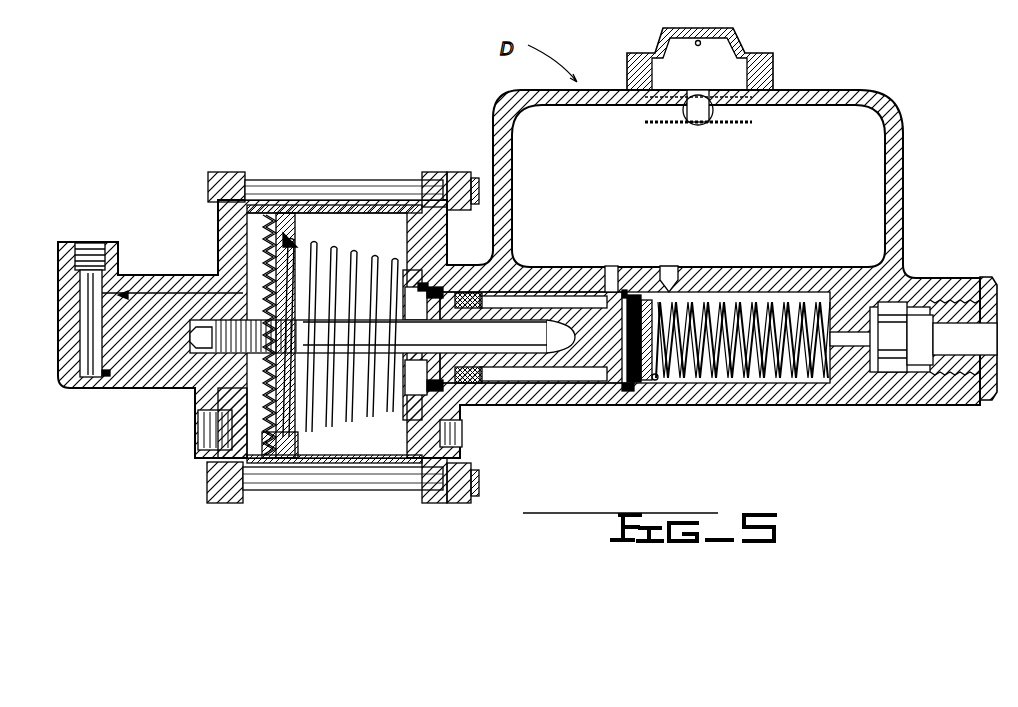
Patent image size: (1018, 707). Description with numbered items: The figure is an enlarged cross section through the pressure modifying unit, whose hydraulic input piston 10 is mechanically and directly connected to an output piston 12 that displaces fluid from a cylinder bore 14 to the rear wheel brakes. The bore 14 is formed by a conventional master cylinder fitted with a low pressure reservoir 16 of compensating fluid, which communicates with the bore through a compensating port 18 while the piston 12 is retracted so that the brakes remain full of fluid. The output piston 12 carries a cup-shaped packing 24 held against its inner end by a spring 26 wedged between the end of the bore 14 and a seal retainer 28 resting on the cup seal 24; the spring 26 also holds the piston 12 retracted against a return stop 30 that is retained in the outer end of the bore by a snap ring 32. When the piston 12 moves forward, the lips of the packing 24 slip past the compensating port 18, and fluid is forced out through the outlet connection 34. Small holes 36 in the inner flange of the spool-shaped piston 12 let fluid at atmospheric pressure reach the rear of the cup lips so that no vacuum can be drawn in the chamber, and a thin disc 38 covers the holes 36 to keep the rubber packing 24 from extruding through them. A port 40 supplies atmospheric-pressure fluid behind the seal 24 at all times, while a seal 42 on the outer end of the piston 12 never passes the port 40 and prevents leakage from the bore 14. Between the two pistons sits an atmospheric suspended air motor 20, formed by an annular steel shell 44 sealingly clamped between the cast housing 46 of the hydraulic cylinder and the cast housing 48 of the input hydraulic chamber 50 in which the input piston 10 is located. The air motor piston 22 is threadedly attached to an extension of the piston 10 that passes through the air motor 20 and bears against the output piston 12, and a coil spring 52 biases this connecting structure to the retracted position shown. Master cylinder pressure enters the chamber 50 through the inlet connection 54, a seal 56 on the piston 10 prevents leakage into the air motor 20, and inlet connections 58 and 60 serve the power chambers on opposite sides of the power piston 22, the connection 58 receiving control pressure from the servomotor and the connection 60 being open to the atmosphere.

The hydraulic input piston 10 is at (163, 295).
The output piston 12 is at (578, 370).
The cylinder bore 14 is at (795, 385).
The low pressure reservoir 16 is at (706, 170).
The compensating port 18 is at (665, 272).
The air motor 20 is at (380, 177).
The piston of the air motor 22 is at (290, 240).
The cup-shaped packing 24 is at (640, 393).
The spring 26 is at (770, 385).
The seal retainer 28 is at (652, 393).
The return stop 30 is at (438, 288).
The snap ring 32 is at (428, 283).
The outlet connection 34 is at (990, 355).
The small holes 36 is at (620, 392).
The thin disc 38 is at (628, 395).
The port 40 is at (616, 268).
The seal 42 is at (470, 385).
The annular steel shell 44 is at (380, 463).
The cast housing of the hydraulic cylinder 46 is at (462, 455).
The cast housing of the input hydraulic chamber 48 is at (248, 448).
The input hydraulic chamber 50 is at (80, 313).
The coil spring 52 is at (332, 425).
The inlet connection 54 is at (97, 242).
The seal 56 is at (120, 377).
The inlet connection 58 is at (198, 428).
The inlet connection 60 is at (462, 437).